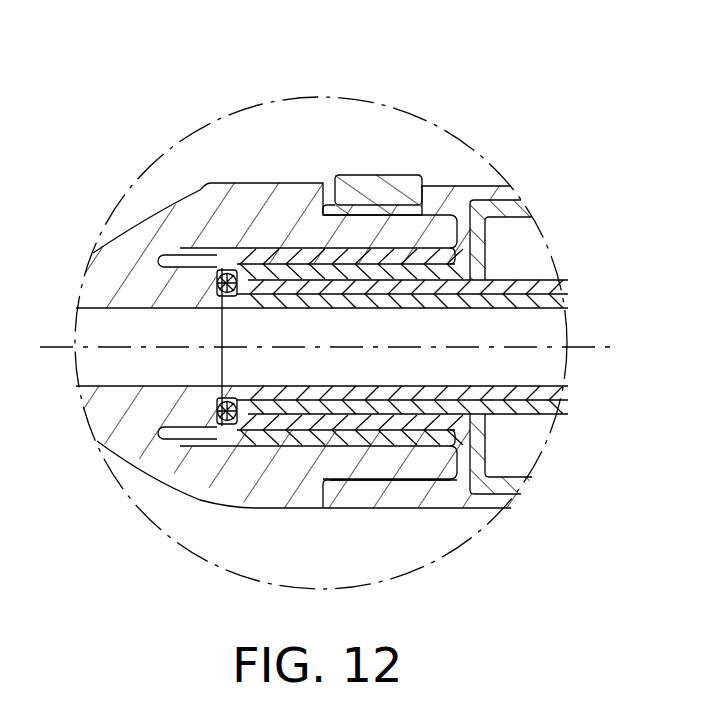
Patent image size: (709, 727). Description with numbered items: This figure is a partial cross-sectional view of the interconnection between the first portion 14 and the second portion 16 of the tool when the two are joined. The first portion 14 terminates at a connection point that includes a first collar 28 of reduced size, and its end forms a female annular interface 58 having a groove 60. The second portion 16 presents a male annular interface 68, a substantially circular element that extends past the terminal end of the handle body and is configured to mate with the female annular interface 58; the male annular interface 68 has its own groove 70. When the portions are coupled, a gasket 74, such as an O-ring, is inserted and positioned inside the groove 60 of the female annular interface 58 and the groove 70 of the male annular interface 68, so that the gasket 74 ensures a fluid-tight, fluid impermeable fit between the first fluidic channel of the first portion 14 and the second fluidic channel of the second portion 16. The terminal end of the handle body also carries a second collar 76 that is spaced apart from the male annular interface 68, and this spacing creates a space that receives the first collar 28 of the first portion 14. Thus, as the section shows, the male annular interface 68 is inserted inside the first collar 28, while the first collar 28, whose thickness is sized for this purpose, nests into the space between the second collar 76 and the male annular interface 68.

The first portion 14 is at (133, 260).
The second portion 16 is at (487, 205).
The first collar 28 is at (363, 470).
The female annular interface 58 is at (160, 250).
The groove 60 is at (185, 290).
The male annular interface 68 is at (383, 270).
The groove 70 is at (285, 183).
The gasket 74 is at (223, 273).
The second collar 76 is at (402, 497).